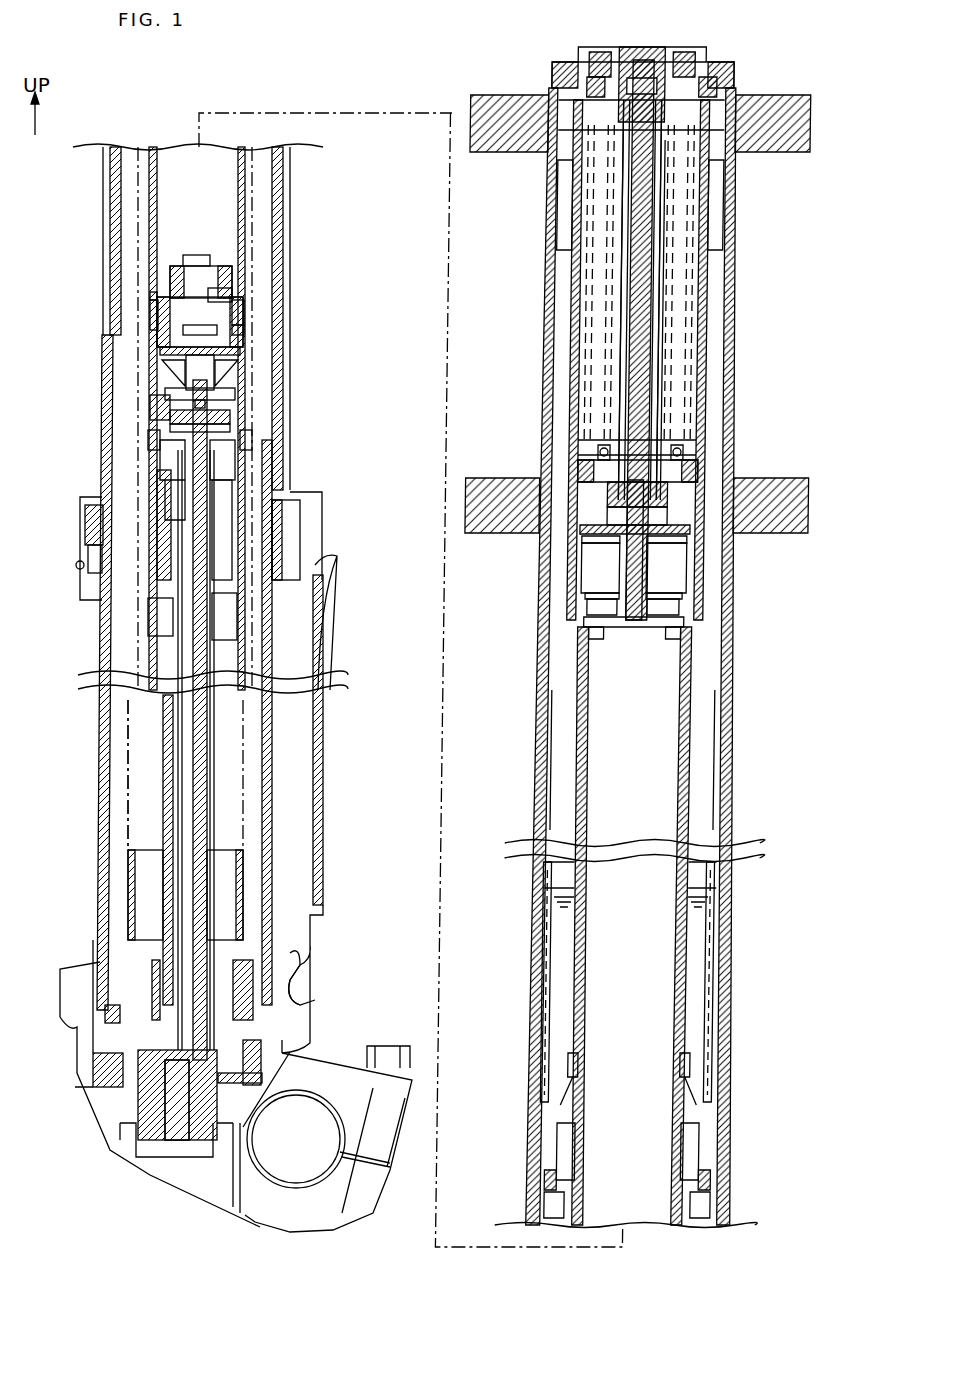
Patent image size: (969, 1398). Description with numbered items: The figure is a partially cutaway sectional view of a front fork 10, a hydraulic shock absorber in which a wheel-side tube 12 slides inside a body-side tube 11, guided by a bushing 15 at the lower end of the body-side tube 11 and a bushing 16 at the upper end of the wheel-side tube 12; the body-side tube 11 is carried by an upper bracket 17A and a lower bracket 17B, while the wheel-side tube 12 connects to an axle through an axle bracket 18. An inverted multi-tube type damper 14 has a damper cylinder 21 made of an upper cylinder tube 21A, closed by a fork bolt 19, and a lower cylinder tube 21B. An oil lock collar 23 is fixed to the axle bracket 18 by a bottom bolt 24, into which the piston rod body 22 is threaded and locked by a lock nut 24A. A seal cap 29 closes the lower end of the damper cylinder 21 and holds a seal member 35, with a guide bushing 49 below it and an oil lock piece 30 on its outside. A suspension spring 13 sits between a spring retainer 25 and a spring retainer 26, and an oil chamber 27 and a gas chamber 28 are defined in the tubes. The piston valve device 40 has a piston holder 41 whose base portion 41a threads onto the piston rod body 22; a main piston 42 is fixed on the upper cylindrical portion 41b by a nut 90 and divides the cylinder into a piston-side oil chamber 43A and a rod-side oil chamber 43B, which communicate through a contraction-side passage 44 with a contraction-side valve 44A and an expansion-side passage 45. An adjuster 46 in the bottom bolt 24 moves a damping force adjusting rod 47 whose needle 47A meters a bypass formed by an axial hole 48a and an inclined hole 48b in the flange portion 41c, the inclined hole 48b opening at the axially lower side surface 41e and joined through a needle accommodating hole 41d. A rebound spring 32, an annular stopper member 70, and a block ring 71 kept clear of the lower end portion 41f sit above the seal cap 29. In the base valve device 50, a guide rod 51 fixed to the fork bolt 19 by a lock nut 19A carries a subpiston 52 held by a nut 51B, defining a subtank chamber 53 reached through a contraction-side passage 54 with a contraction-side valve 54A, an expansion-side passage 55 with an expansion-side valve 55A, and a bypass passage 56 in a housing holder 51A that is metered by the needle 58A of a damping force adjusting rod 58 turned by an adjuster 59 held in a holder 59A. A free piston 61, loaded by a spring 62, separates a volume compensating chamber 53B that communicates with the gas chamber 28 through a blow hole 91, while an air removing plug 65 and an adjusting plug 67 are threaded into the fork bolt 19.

The front fork 10 is at (118, 118).
The body-side tube 11 is at (108, 178).
The wheel-side tube 12 is at (108, 213).
The suspension spring 13 is at (78, 1038).
The multi-tube type damper 14 is at (170, 193).
The bushing 15 is at (100, 492).
The bushing 16 is at (555, 937).
The upper bracket 17A is at (503, 153).
The lower bracket 17B is at (506, 480).
The axle bracket 18 is at (343, 1075).
The fork bolt 19 is at (577, 69).
The lock nut 19A is at (670, 225).
The damper cylinder 21 is at (150, 238).
The upper cylinder tube 21A is at (578, 375).
The lower cylinder tube 21B is at (155, 292).
The piston rod body 22 is at (165, 475).
The oil lock collar 23 is at (125, 872).
The bottom bolt 24 is at (137, 1127).
The lock nut 24A is at (280, 1020).
The spring retainer 25 is at (77, 1068).
The spring retainer 26 is at (563, 1172).
The oil chamber 27 is at (142, 647).
The gas chamber 28 is at (567, 738).
The seal cap 29 is at (232, 568).
The oil lock piece 30 is at (237, 610).
The rebound spring 32 is at (153, 437).
The seal member 35 is at (283, 513).
The piston valve device 40 is at (215, 243).
The piston holder 41 is at (162, 447).
The base portion 41a is at (222, 452).
The upper cylindrical portion 41b is at (234, 311).
The flange portion 41c is at (200, 384).
The needle accommodating hole 41d is at (198, 405).
The axially lower side surface 41e is at (165, 383).
The lower end portion 41f is at (222, 482).
The main piston 42 is at (236, 320).
The piston-side oil chamber 43A is at (202, 197).
The rod-side oil chamber 43B is at (160, 410).
The contraction-side passage 44 is at (173, 312).
The contraction-side valve 44A is at (158, 287).
The expansion-side passage 45 is at (220, 295).
The adjuster 46 is at (167, 1140).
The damping force adjusting rod 47 is at (190, 615).
The needle 47A is at (198, 372).
The axial hole 48a is at (188, 330).
The inclined hole 48b is at (160, 355).
The guide bushing 49 is at (105, 550).
The base valve device 50 is at (681, 637).
The guide rod 51 is at (657, 292).
The housing holder 51A is at (618, 635).
The nut 51B is at (695, 640).
The subpiston 52 is at (681, 594).
The subtank chamber 53 is at (687, 527).
The volume compensating chamber 53B is at (671, 333).
The contraction-side passage 54 is at (607, 578).
The contraction-side valve 54A is at (590, 540).
The expansion-side passage 55 is at (674, 570).
The expansion-side valve 55A is at (668, 617).
The bypass passage 56 is at (667, 510).
The damping force adjusting rod 58 is at (644, 358).
The needle 58A is at (647, 482).
The adjuster 59 is at (713, 53).
The holder 59A is at (603, 63).
The free piston 61 is at (676, 458).
The spring 62 is at (689, 392).
The air removing plug 65 is at (723, 77).
The adjusting plug 67 is at (560, 64).
The annular stopper member 70 is at (182, 412).
The block ring 71 is at (230, 424).
The nut 90 is at (213, 268).
The blow hole 91 is at (578, 268).